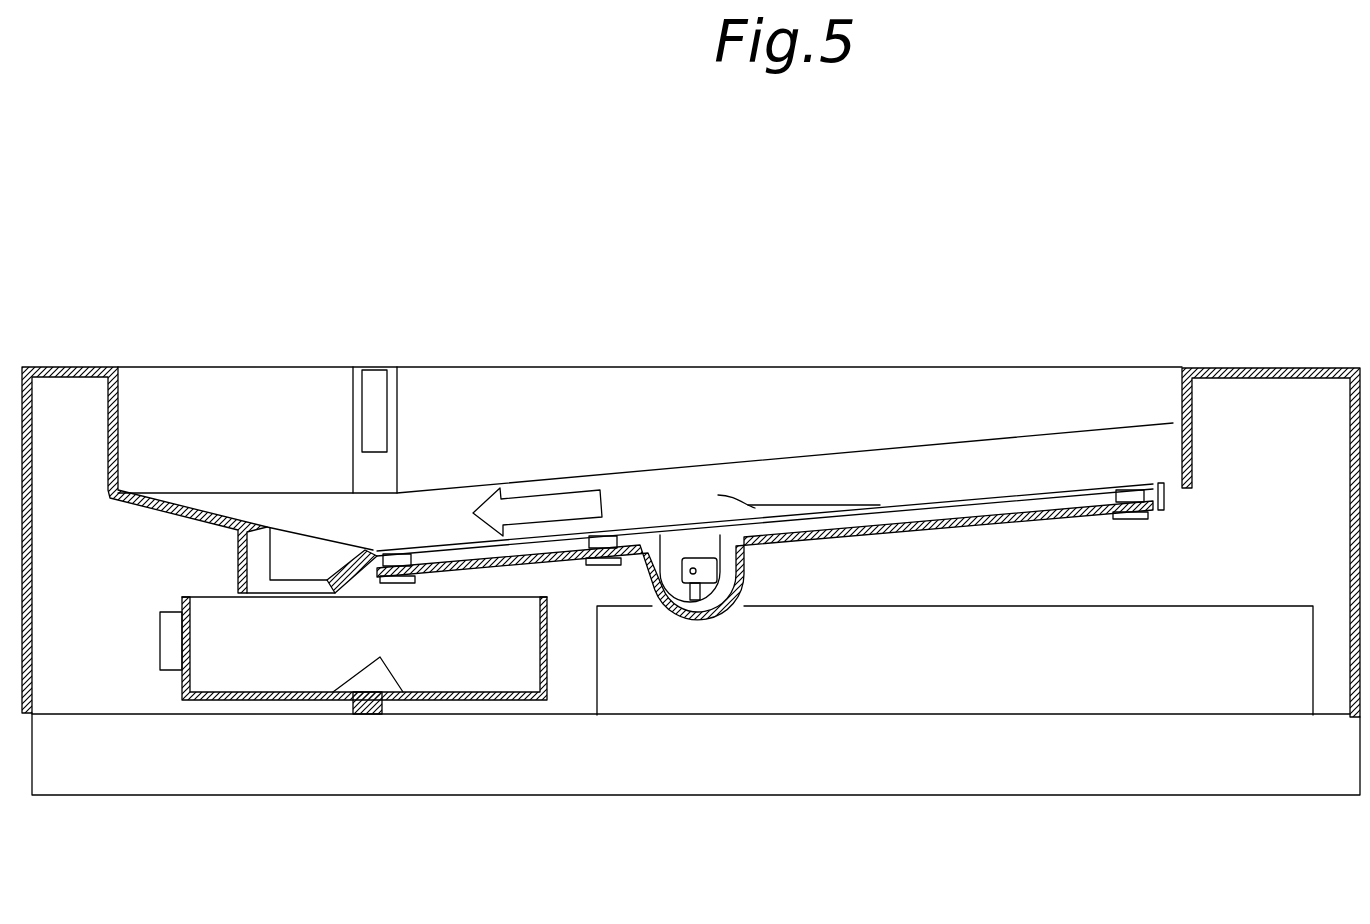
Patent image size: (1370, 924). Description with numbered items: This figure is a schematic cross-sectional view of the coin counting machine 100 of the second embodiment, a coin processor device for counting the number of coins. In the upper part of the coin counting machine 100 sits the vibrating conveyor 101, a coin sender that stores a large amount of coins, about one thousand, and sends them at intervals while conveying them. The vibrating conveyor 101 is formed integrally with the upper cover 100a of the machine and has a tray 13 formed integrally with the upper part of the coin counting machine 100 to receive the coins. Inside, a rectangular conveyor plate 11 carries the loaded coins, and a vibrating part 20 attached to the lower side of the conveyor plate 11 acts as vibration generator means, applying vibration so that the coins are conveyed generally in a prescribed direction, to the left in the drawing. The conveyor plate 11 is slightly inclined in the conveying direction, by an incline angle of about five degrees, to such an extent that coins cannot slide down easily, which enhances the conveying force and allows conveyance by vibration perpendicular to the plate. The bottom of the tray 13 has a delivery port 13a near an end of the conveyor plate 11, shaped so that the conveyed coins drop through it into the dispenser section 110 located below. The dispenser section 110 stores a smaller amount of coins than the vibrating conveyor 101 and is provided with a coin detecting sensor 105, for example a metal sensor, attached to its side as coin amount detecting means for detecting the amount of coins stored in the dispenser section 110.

The coin counting machine 100 is at (717, 250).
The upper cover 100a is at (156, 351).
The vibrating conveyor 101 is at (768, 352).
The tray 13 is at (612, 385).
The delivery port 13a is at (308, 550).
The conveyor plate 11 is at (935, 512).
The vibrating part 20 is at (735, 573).
The coin detecting sensor 105 is at (160, 625).
The dispenser section 110 is at (172, 690).